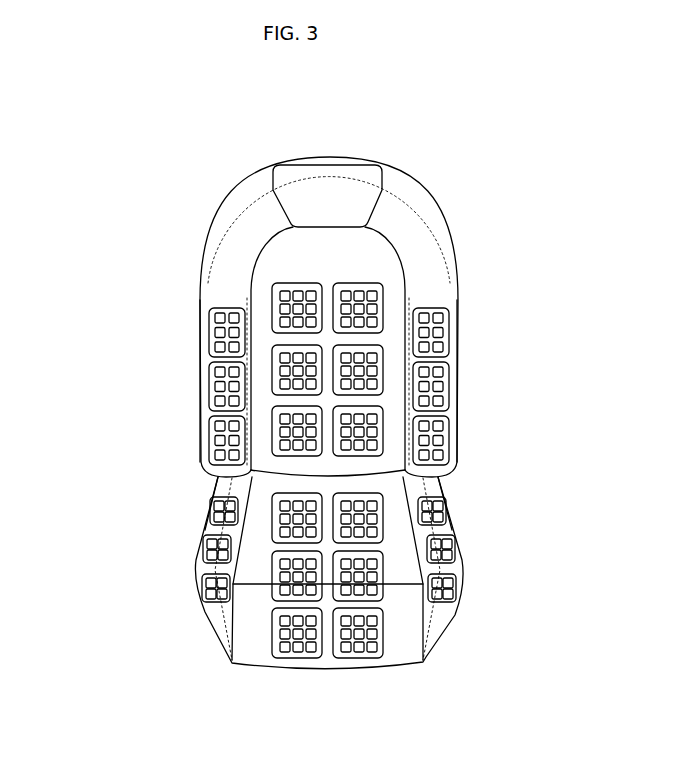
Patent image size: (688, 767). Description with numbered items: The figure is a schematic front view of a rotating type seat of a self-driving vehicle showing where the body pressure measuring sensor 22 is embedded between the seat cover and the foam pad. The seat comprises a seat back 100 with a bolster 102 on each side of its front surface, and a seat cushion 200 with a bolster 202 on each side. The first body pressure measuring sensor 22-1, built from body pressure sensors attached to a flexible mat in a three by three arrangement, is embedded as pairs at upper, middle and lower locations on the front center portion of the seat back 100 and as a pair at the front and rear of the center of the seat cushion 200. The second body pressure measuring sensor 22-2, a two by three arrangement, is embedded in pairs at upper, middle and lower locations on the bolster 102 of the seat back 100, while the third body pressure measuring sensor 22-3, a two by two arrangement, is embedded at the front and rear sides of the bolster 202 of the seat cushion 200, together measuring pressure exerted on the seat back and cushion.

The body pressure measuring sensor 22 is at (73, 545).
The first body pressure measuring sensor 22-1 is at (133, 198).
The second body pressure measuring sensor 22-2 is at (133, 323).
The third body pressure measuring sensor 22-3 is at (133, 497).
The seat back 100 is at (430, 208).
The bolster 102 is at (458, 312).
The seat cushion 200 is at (252, 667).
The bolster 202 is at (215, 617).